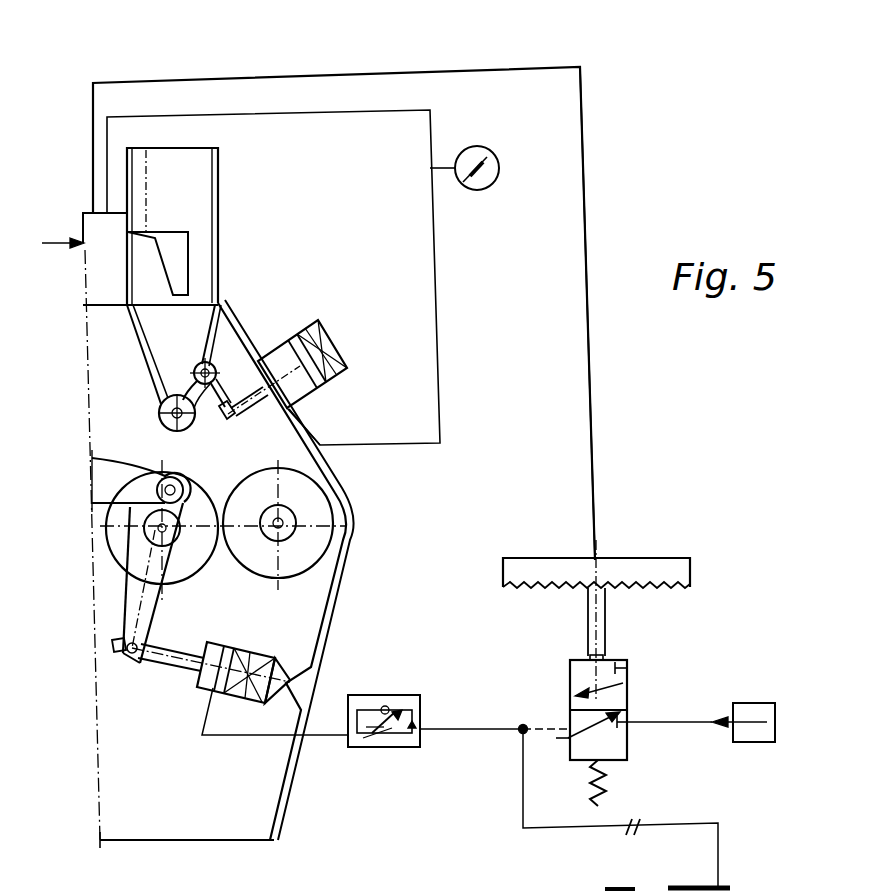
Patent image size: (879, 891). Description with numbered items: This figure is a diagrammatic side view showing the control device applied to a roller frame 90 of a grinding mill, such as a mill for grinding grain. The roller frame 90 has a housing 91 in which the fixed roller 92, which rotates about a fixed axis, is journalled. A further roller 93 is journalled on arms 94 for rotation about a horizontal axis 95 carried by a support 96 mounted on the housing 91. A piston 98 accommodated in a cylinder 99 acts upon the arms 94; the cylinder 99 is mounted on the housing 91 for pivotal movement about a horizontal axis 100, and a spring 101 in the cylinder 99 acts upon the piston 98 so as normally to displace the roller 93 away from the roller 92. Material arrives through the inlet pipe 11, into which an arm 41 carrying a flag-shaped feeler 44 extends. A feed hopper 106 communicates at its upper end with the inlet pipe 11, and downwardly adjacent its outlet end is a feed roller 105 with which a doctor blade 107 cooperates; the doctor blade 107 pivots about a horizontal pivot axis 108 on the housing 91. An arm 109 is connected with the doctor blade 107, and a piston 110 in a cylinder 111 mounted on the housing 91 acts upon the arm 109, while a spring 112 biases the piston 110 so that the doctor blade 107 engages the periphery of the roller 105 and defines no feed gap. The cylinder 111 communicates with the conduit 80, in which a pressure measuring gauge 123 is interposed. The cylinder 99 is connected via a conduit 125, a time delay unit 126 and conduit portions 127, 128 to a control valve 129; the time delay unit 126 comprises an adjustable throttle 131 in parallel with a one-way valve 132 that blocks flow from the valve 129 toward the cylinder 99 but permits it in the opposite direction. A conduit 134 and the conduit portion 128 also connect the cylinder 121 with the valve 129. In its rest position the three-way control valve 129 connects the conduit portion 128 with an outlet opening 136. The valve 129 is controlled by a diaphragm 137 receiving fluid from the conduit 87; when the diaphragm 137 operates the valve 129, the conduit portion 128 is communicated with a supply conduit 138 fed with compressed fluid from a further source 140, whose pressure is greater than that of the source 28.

The inlet pipe 11 is at (143, 150).
The arm 41 is at (140, 232).
The feeler 44 is at (182, 245).
The source 28 is at (60, 240).
The feed hopper 106 is at (178, 345).
The doctor blade 107 is at (205, 362).
The horizontal pivot axis 108 is at (218, 380).
The feed roller 105 is at (238, 388).
The arm 109 is at (248, 396).
The piston 110 is at (279, 366).
The cylinder 111 is at (327, 333).
The spring 112 is at (325, 352).
The conduit 80 is at (441, 355).
The pressure measuring gauge 123 is at (468, 147).
The conduit 87 is at (583, 124).
The horizontal axis 95 is at (182, 480).
The support 96 is at (116, 470).
The further roller 93 is at (205, 497).
The arms 94 is at (162, 597).
The fixed roller 92 is at (256, 493).
The cylinder 99 is at (228, 695).
The spring 101 is at (255, 692).
The horizontal axis 100 is at (287, 688).
The piston 98 is at (215, 688).
The roller frame 90 is at (306, 658).
The housing 91 is at (342, 553).
The conduit 125 is at (222, 737).
The time delay unit 126 is at (407, 708).
The one-way valve 132 is at (357, 745).
The throttle 131 is at (386, 712).
The conduit portion 127 is at (460, 730).
The conduit portion 128 is at (521, 727).
The control valve 129 is at (633, 668).
The diaphragm 137 is at (638, 558).
The outlet opening 136 is at (633, 713).
The supply conduit 138 is at (623, 723).
The further source 140 is at (743, 727).
The conduit 134 is at (740, 840).
The cylinder 121 is at (707, 888).